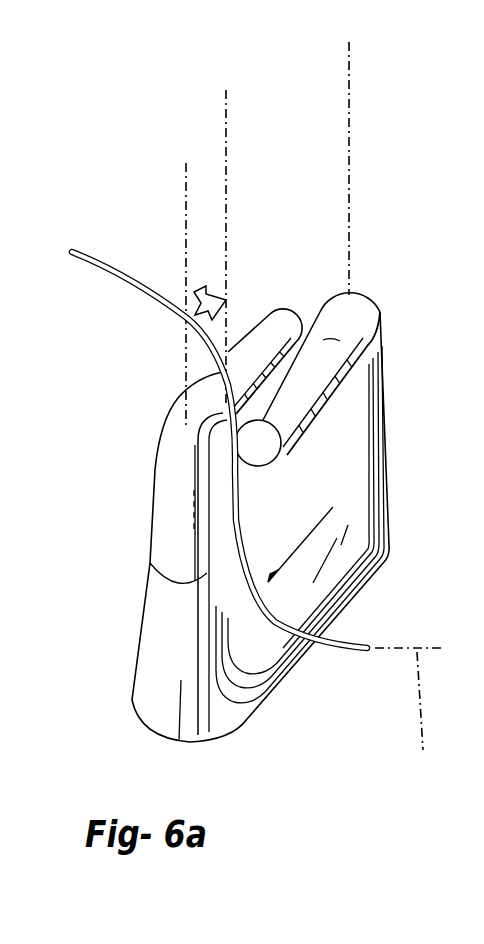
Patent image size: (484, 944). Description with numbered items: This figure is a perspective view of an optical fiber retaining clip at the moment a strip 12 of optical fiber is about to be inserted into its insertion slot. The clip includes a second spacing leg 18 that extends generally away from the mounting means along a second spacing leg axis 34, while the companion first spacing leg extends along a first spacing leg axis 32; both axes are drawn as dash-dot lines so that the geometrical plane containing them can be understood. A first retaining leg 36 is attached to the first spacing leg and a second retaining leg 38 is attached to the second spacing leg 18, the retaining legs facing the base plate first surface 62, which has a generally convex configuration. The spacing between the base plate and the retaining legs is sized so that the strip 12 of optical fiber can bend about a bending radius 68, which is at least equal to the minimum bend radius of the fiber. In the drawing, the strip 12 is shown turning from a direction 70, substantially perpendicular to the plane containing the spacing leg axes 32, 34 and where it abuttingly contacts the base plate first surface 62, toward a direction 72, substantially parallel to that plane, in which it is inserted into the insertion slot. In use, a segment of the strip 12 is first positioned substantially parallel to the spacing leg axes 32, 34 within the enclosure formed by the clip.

The strip of optical fiber 12 is at (253, 587).
The second spacing leg 18 is at (167, 523).
The first spacing leg axis 32 is at (340, 80).
The second spacing leg axis 34 is at (182, 170).
The first retaining leg 36 is at (336, 383).
The second retaining leg 38 is at (203, 387).
The base plate first surface 62 is at (297, 657).
The bending radius 68 is at (335, 516).
The direction substantially perpendicular to the spacing leg axes plane 70 is at (409, 716).
The direction substantially parallel to the spacing leg axes plane 72 is at (222, 98).